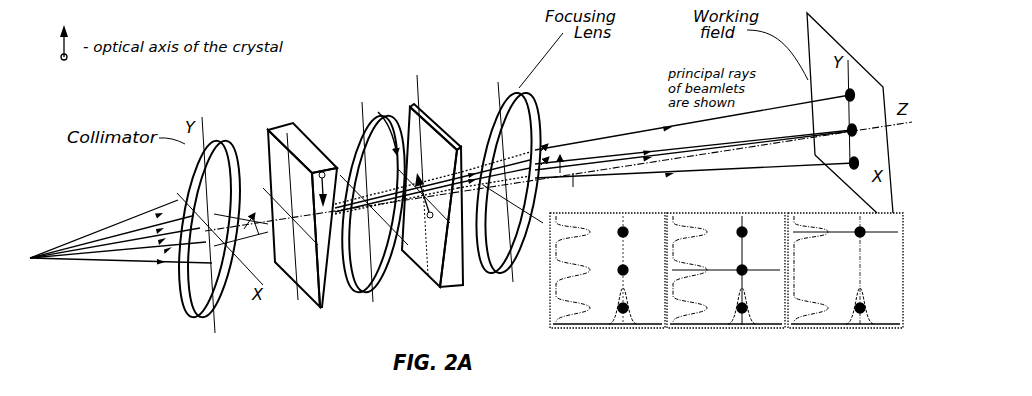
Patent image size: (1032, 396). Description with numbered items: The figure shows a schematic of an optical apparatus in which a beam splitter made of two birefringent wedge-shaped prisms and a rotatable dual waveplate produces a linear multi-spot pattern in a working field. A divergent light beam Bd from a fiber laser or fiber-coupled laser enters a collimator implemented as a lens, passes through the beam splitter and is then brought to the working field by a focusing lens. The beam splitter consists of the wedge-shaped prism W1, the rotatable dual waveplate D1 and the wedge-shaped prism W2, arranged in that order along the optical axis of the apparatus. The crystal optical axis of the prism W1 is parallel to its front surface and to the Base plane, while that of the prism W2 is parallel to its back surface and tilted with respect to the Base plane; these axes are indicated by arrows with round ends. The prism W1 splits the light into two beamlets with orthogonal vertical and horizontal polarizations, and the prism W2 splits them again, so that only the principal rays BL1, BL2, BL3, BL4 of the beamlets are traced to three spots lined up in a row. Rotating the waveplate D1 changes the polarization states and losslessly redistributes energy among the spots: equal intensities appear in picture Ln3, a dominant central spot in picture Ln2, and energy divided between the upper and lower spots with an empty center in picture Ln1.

The divergent light beam Bd is at (149, 231).
The wedge-shaped prism W1 is at (270, 128).
The rotatable dual waveplate D1 is at (358, 112).
The wedge-shaped prism W2 is at (428, 111).
The principal ray of beamlet BL1 is at (577, 143).
The principal ray of beamlet BL2 is at (614, 154).
The principal ray of beamlet BL3 is at (600, 168).
The principal ray of beamlet BL4 is at (649, 178).
The line-shaped multi-spot pattern Ln1 is at (845, 286).
The line-shaped multi-spot pattern Ln2 is at (726, 286).
The line-shaped multi-spot pattern Ln3 is at (607, 286).